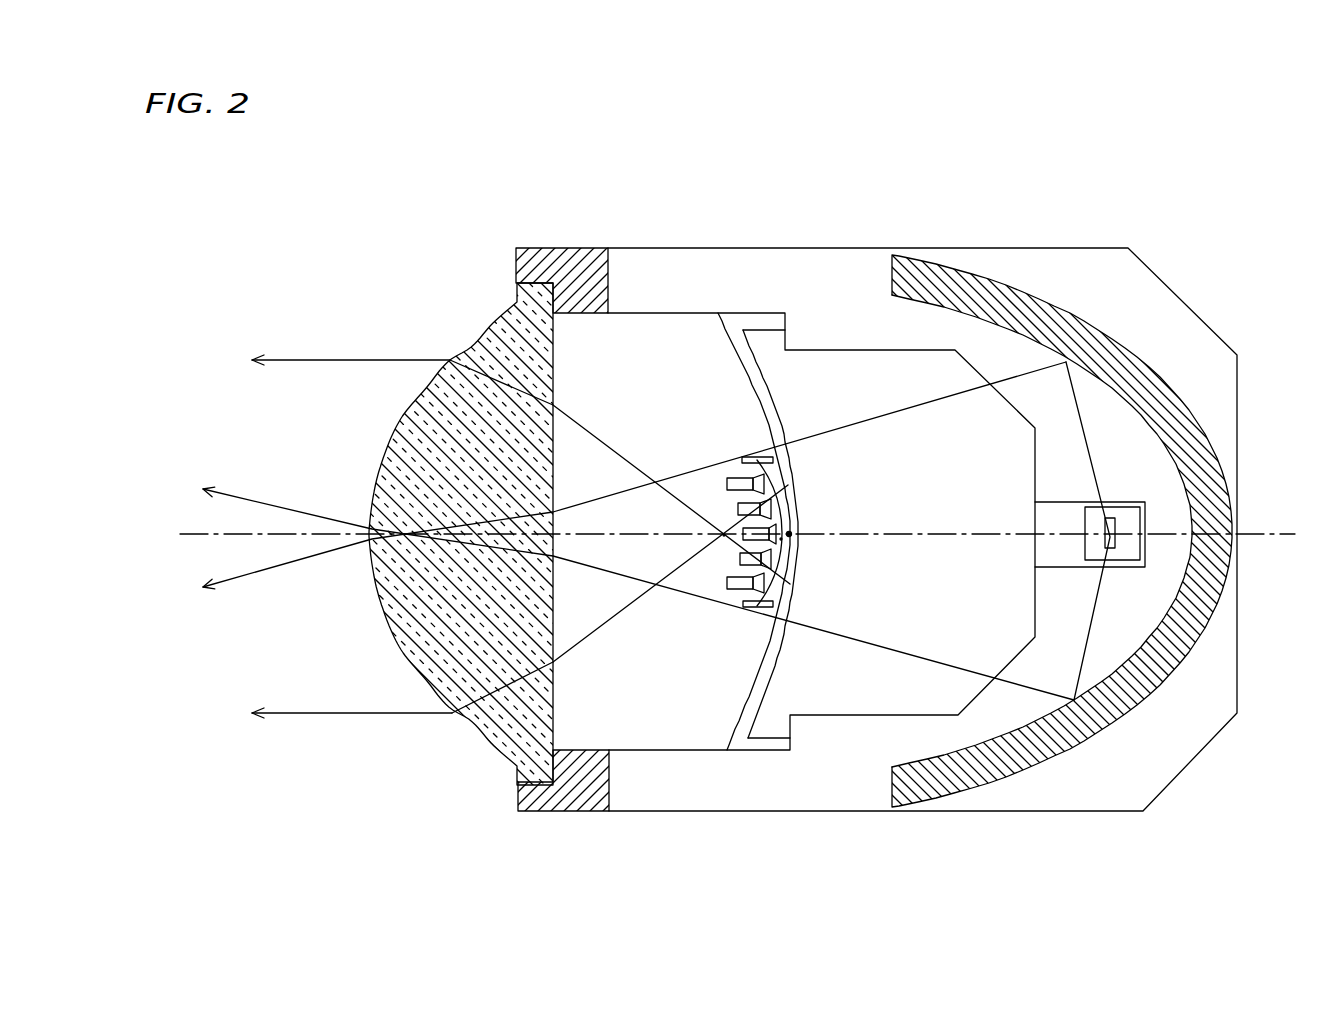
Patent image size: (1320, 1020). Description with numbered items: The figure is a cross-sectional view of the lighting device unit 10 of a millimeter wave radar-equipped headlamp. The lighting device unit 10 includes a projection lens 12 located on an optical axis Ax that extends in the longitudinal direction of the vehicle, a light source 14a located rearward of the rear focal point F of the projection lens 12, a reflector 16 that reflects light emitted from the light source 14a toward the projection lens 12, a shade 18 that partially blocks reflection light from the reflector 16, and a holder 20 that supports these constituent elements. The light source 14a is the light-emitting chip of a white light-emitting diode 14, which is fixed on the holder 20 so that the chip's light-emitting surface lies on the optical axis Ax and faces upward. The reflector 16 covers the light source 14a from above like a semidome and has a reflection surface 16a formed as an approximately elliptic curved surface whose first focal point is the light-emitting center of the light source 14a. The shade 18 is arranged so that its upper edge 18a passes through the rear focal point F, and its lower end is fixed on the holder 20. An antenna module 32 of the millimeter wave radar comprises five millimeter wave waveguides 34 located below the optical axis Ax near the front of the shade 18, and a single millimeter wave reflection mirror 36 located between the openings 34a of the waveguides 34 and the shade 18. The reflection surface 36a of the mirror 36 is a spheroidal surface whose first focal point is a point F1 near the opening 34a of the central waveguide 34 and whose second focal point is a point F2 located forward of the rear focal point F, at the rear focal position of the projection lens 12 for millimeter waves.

The lighting device unit 10 is at (344, 217).
The projection lens 12 is at (399, 417).
The white light-emitting diode 14 is at (1146, 540).
The light source 14a is at (1113, 540).
The reflector 16 is at (830, 531).
The reflection surface 16a is at (1113, 402).
The shade 18 is at (793, 531).
The upper edge 18a is at (781, 650).
The holder 20 is at (850, 246).
The antenna module 32 is at (729, 535).
The millimeter wave waveguides 34 is at (743, 533).
The opening 34a is at (757, 491).
The millimeter wave reflection mirror 36 is at (744, 457).
The reflection surface 36a is at (745, 607).
The rear focal point F is at (791, 534).
The first focal point of the mirror reflection surface F1 is at (782, 540).
The second focal point of the mirror reflection surface F2 is at (724, 537).
The optical axis Ax is at (203, 540).